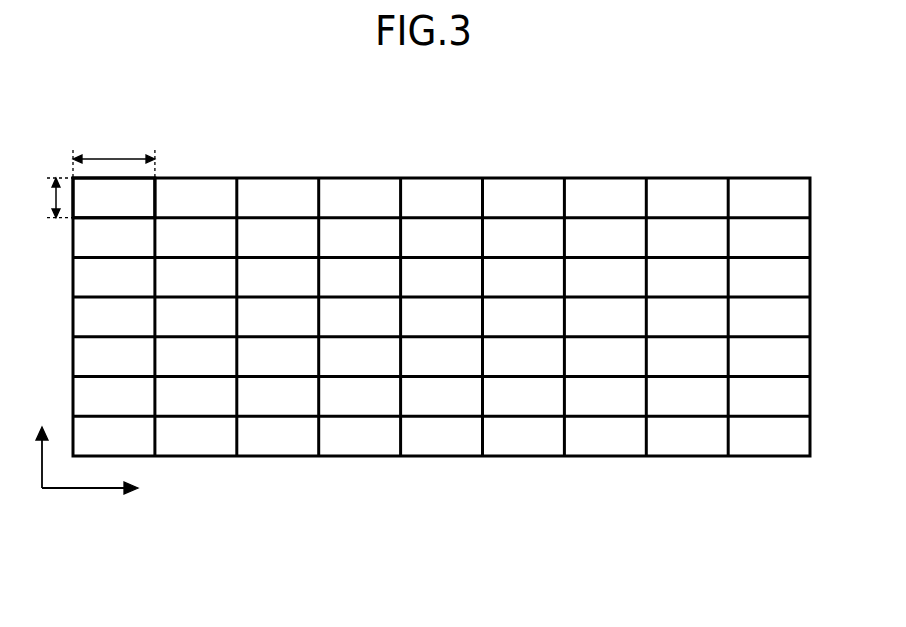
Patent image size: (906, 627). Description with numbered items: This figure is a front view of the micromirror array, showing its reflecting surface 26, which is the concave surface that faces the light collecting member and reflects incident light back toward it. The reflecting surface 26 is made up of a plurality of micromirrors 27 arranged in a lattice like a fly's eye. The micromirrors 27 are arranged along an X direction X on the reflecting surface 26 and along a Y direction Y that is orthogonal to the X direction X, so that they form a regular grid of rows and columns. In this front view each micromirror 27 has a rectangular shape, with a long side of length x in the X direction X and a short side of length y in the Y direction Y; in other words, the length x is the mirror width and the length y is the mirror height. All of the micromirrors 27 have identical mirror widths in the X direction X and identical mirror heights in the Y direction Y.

The reflecting surface 26 is at (413, 125).
The micromirror 27 is at (137, 188).
The length x is at (115, 157).
The length y is at (52, 198).
The X direction X is at (98, 488).
The Y direction Y is at (41, 443).